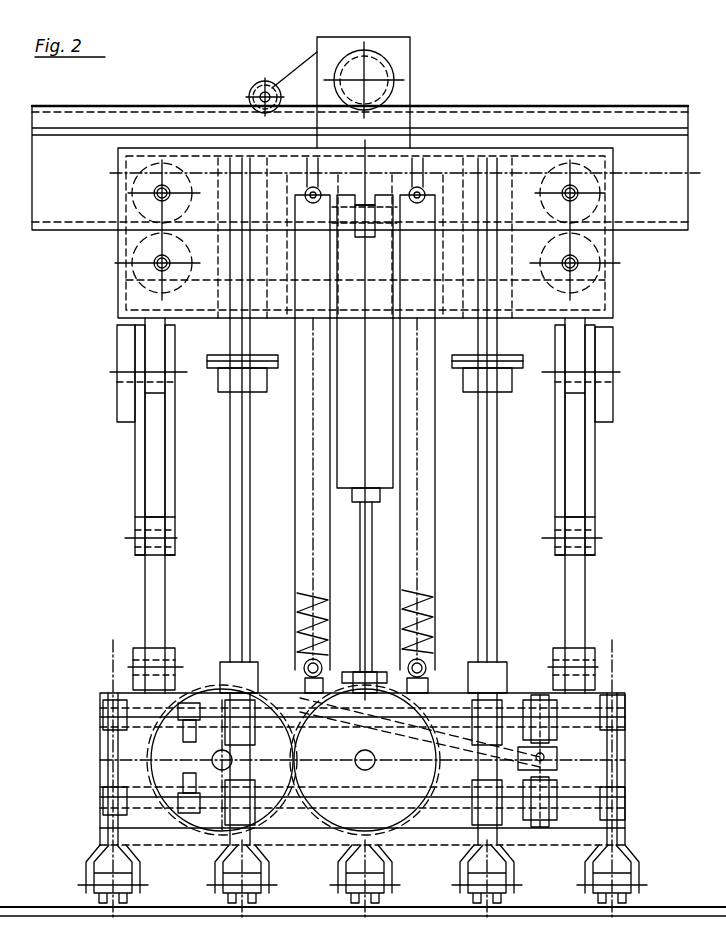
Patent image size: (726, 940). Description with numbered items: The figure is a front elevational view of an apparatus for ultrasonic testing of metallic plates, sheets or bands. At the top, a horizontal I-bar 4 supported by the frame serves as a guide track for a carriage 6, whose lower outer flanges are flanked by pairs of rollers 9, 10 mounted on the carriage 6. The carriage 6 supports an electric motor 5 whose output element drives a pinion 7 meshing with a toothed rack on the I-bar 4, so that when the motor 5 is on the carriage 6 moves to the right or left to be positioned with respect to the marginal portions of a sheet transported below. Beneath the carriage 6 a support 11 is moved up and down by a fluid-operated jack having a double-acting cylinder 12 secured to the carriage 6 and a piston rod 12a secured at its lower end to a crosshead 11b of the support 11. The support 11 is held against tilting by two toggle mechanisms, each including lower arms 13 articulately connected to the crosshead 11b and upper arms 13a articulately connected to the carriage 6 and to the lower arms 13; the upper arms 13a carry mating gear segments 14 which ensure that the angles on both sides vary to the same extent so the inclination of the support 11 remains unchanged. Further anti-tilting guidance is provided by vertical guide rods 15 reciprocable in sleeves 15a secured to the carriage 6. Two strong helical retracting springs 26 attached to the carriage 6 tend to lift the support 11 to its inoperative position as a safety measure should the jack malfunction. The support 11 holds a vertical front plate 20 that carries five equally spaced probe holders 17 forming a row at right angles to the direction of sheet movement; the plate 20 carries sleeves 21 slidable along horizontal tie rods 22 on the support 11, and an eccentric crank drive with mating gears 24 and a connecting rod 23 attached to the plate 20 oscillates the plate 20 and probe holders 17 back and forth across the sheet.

The horizontal I-bar 4 is at (651, 212).
The electric motor 5 is at (393, 80).
The carriage 6 is at (603, 293).
The pinion 7 is at (253, 85).
The roller 9 is at (147, 200).
The roller 10 is at (147, 255).
The support 11 is at (612, 690).
The crosshead 11b is at (592, 643).
The double-acting cylinder 12 is at (378, 453).
The piston rod 12a is at (358, 522).
The lower arm 13 is at (145, 572).
The upper arm 13a is at (140, 512).
The gear segment 14 is at (118, 417).
The vertical guide rod 15 is at (245, 445).
The sleeve 15a is at (262, 382).
The probe holder 17 is at (140, 885).
The front plate 20 is at (130, 752).
The sleeve 21 is at (533, 697).
The horizontal tie rod 22 is at (580, 793).
The connecting rod 23 is at (447, 690).
The mating gear 24 is at (300, 695).
The helical retracting spring 26 is at (302, 517).